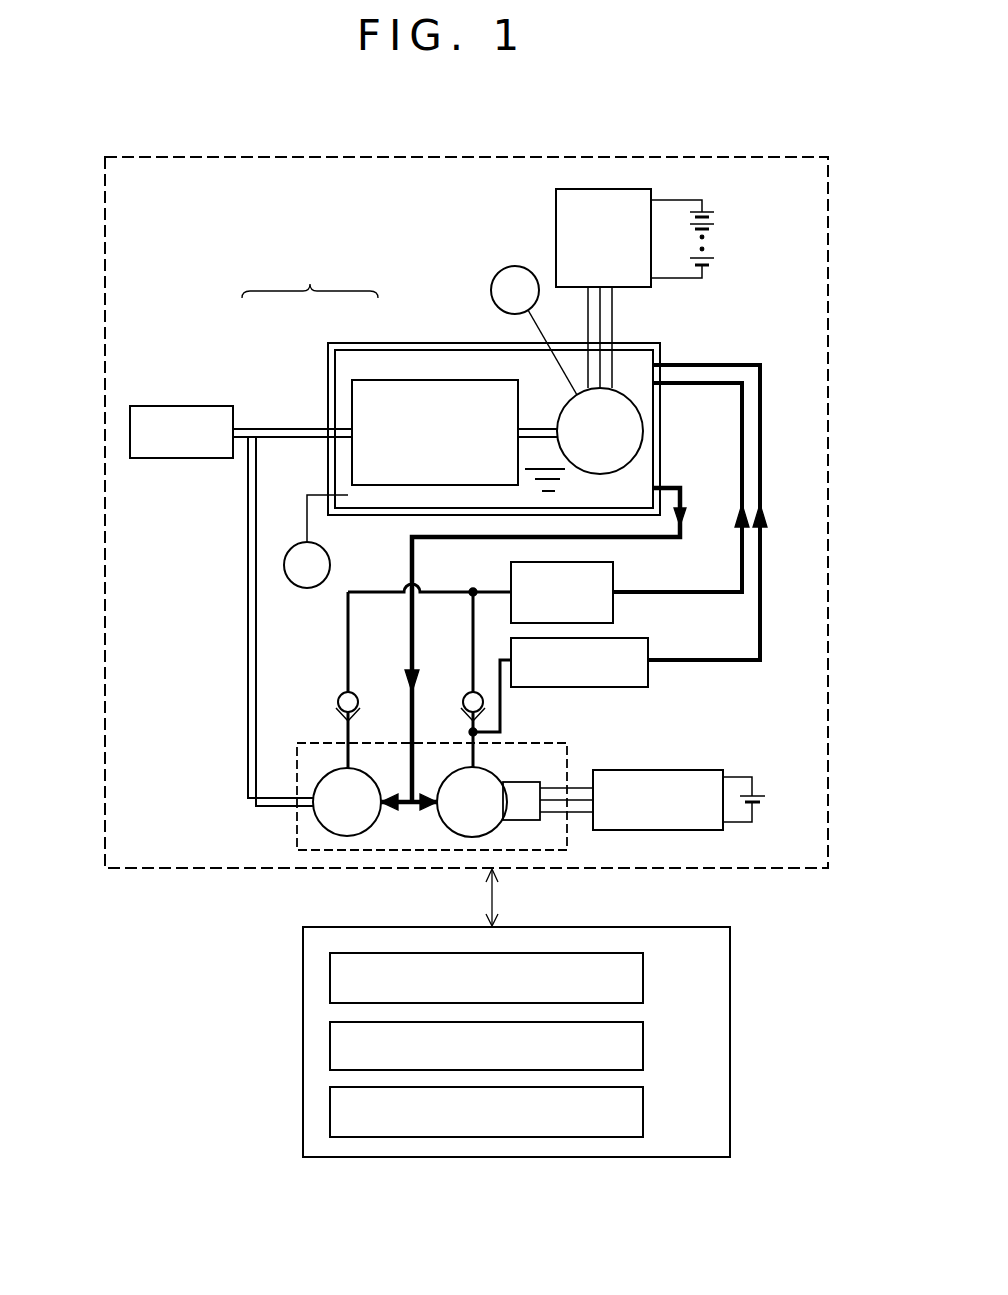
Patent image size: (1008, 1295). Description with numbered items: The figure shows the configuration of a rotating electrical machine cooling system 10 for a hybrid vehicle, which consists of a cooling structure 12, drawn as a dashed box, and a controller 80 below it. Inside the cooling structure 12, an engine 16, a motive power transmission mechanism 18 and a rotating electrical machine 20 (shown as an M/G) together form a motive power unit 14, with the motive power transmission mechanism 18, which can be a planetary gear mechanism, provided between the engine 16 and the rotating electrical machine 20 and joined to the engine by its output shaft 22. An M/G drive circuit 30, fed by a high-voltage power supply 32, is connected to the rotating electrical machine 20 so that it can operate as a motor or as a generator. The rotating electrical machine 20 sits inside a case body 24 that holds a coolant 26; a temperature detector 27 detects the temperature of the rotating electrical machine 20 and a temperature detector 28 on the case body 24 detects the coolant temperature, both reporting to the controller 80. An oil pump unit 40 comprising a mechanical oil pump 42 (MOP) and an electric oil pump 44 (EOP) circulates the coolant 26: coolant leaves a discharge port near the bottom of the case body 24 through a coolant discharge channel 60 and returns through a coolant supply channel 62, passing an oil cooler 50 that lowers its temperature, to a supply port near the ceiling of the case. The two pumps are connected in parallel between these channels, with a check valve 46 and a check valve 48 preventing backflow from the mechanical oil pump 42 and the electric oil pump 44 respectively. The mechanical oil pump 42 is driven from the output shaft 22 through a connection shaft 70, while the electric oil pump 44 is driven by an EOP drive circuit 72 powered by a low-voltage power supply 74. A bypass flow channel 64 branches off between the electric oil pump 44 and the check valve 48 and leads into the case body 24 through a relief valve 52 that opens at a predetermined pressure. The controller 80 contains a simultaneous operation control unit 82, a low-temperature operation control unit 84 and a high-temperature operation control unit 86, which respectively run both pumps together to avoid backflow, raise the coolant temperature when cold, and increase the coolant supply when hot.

The rotating electrical machine cooling system 10 is at (212, 1031).
The cooling structure 12 is at (105, 800).
The motive power unit 14 is at (310, 275).
The engine 16 is at (218, 406).
The motive power transmission mechanism 18 is at (370, 379).
The rotating electrical machine 20 is at (573, 400).
The output shaft 22 is at (277, 428).
The case body 24 is at (367, 516).
The coolant 26 is at (343, 478).
The temperature detector 27 is at (497, 273).
The temperature detector 28 is at (305, 588).
The M/G drive circuit 30 is at (556, 218).
The high-voltage power supply 32 is at (724, 236).
The oil pump unit 40 is at (297, 834).
The mechanical oil pump 42 is at (333, 768).
The electric oil pump 44 is at (492, 771).
The check valve 46 is at (356, 692).
The check valve 48 is at (466, 692).
The oil cooler 50 is at (592, 559).
The relief valve 52 is at (600, 687).
The coolant discharge channel 60 is at (412, 565).
The coolant supply channel 62 is at (742, 437).
The bypass flow channel 64 is at (760, 481).
The connection shaft 70 is at (248, 647).
The EOP drive circuit 72 is at (700, 770).
The low-voltage power supply 74 is at (766, 791).
The controller 80 is at (303, 949).
The simultaneous operation control unit 82 is at (643, 975).
The low-temperature operation control unit 84 is at (643, 1043).
The high-temperature operation control unit 86 is at (643, 1110).